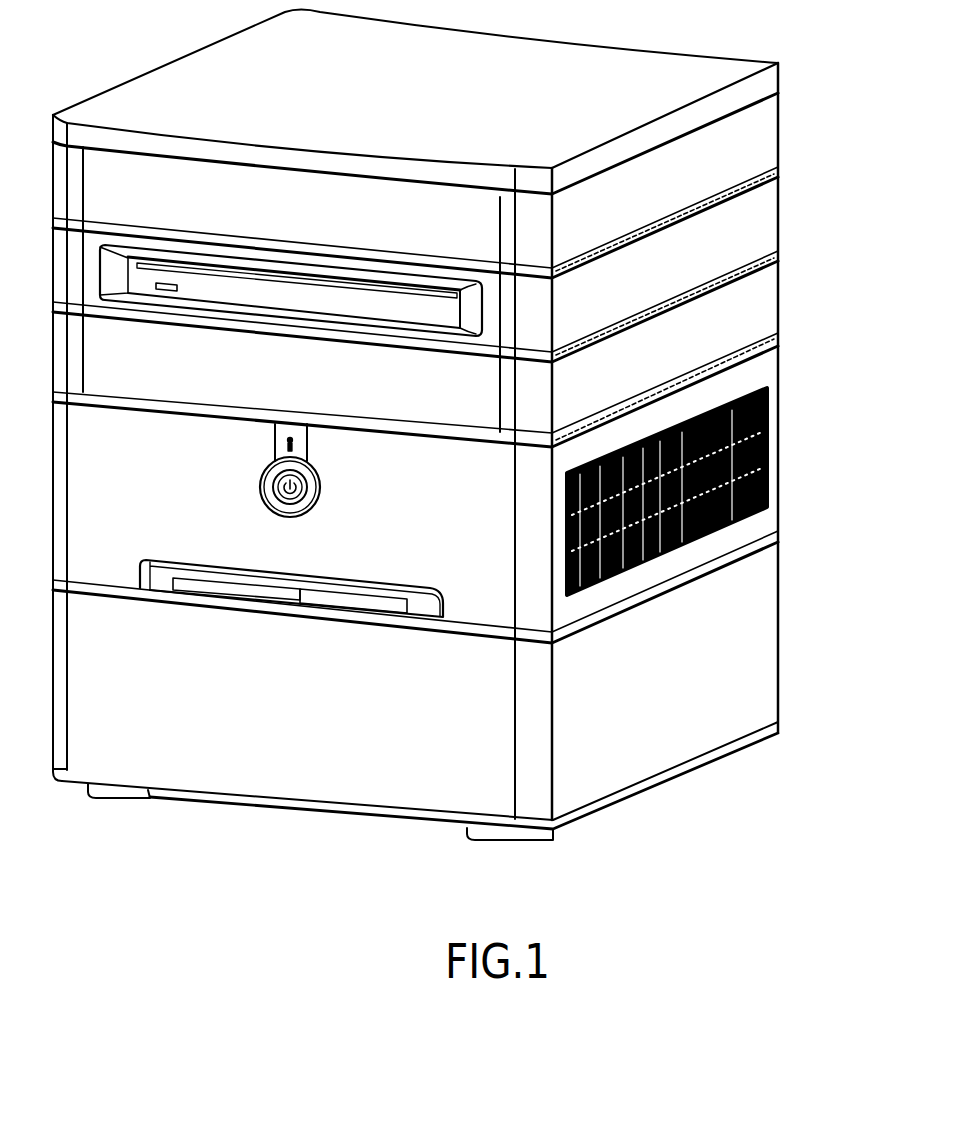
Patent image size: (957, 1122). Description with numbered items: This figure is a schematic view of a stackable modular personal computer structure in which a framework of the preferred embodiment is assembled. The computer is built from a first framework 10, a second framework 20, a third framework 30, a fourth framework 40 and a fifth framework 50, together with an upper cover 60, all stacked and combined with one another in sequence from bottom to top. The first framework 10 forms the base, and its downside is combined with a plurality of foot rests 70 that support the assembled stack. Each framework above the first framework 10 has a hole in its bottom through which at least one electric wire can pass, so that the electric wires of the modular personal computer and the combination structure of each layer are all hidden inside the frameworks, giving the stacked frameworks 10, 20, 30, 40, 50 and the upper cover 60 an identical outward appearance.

The first framework 10 is at (763, 672).
The second framework 20 is at (763, 457).
The third framework 30 is at (763, 313).
The fourth framework 40 is at (763, 231).
The fifth framework 50 is at (762, 153).
The upper cover 60 is at (763, 86).
The foot rests 70 is at (97, 798).